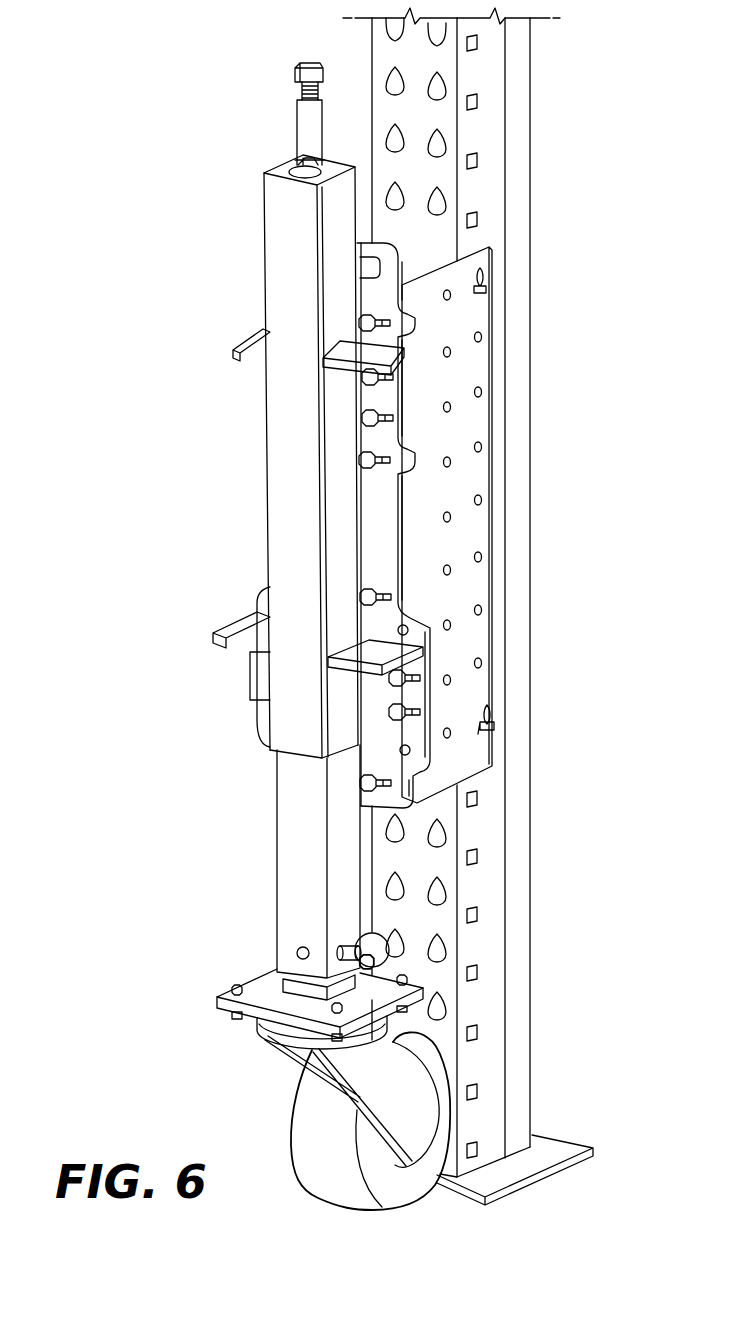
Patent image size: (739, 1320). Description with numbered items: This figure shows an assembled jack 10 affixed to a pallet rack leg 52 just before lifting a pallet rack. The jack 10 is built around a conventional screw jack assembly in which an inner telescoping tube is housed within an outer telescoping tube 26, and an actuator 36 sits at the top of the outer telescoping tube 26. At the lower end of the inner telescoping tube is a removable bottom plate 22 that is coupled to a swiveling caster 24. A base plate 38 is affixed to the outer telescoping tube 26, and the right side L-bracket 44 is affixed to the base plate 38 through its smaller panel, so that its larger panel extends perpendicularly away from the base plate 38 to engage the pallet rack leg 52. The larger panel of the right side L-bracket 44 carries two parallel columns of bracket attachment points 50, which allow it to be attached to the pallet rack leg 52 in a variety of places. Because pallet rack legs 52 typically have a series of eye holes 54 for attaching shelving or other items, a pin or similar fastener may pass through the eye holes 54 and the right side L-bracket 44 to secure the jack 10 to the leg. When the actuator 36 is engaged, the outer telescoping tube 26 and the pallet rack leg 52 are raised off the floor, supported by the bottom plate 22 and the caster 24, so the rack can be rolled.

The jack 10 is at (80, 172).
The bottom plate 22 is at (264, 973).
The swiveling caster 24 is at (291, 1120).
The outer telescoping tube 26 is at (280, 450).
The actuator 36 is at (297, 128).
The base plate 38 is at (390, 535).
The right side L-bracket 44 is at (413, 391).
The bracket attachment points 50 is at (481, 500).
The pallet rack leg 52 is at (372, 58).
The eye holes 54 is at (478, 160).